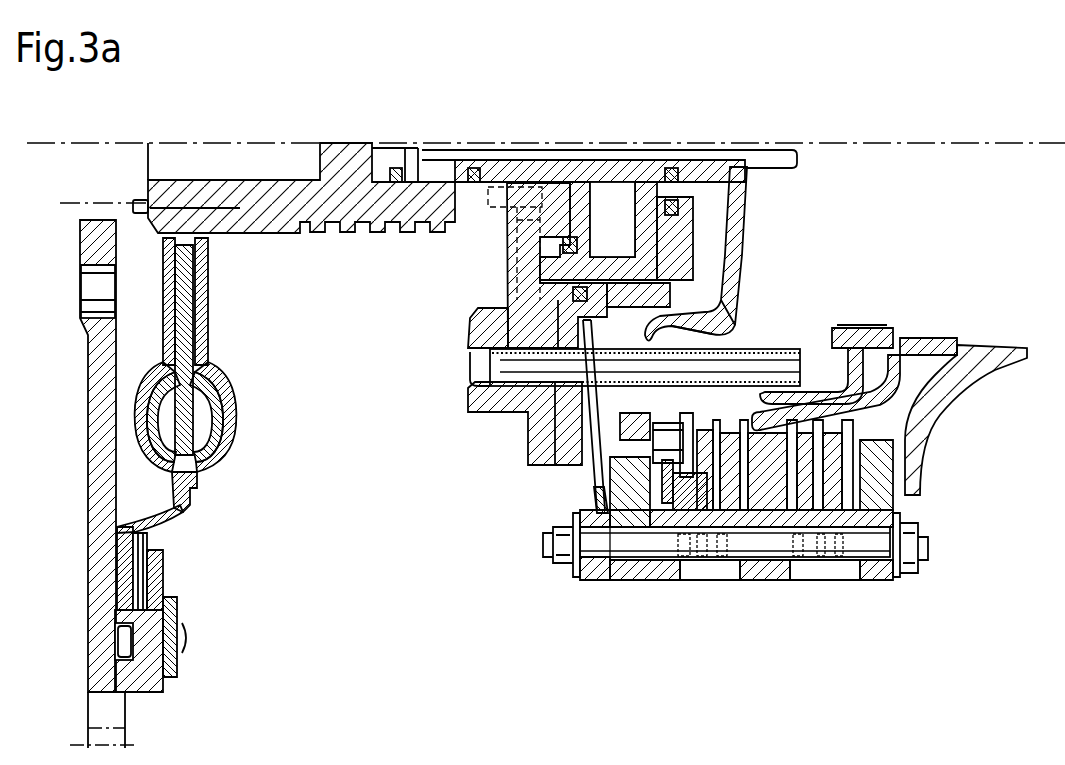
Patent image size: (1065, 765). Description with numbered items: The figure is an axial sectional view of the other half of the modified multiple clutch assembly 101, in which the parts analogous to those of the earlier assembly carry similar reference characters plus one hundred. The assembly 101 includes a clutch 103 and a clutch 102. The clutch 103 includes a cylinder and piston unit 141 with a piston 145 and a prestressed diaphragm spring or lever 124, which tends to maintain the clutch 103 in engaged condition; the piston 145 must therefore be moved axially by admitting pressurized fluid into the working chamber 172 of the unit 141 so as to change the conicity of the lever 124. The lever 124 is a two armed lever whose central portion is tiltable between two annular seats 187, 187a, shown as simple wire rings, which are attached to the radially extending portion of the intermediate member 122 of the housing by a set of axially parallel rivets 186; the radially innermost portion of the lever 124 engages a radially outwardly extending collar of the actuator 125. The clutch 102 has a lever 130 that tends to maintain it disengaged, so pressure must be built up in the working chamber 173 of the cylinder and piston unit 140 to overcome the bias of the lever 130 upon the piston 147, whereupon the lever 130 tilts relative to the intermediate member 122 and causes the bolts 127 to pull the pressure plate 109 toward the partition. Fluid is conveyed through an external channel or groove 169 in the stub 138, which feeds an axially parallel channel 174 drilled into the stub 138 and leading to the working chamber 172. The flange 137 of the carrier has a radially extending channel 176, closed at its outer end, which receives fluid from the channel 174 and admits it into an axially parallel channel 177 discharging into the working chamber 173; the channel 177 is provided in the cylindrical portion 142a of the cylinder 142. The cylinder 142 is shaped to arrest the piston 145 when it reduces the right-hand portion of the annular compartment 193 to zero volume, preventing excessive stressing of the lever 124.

The multiple clutch assembly 101 is at (863, 630).
The clutch 102 is at (825, 595).
The clutch 103 is at (712, 595).
The pressure plate 109 is at (787, 460).
The intermediate member 122 is at (622, 577).
The diaphragm spring 124 is at (662, 510).
The actuator 125 is at (662, 204).
The bolts 127 is at (700, 553).
The lever 130 is at (583, 510).
The flange 137 is at (508, 217).
The stub 138 is at (340, 203).
The cylinder and piston unit 140 is at (655, 255).
The cylinder and piston unit 141 is at (568, 213).
The cylinder 142 is at (690, 152).
The cylindrical portion 142a is at (750, 300).
The piston 145 is at (610, 220).
The piston 147 is at (722, 173).
The external channel 169 is at (398, 168).
The working chamber 172 is at (556, 207).
The working chamber 173 is at (655, 270).
The axially parallel channel 174 is at (472, 200).
The radially extending channel 176 is at (510, 300).
The axially parallel channel 177 is at (537, 255).
The rivets 186 is at (667, 443).
The annular seat 187 is at (647, 510).
The annular seat 187a is at (672, 510).
The annular compartment 193 is at (636, 176).